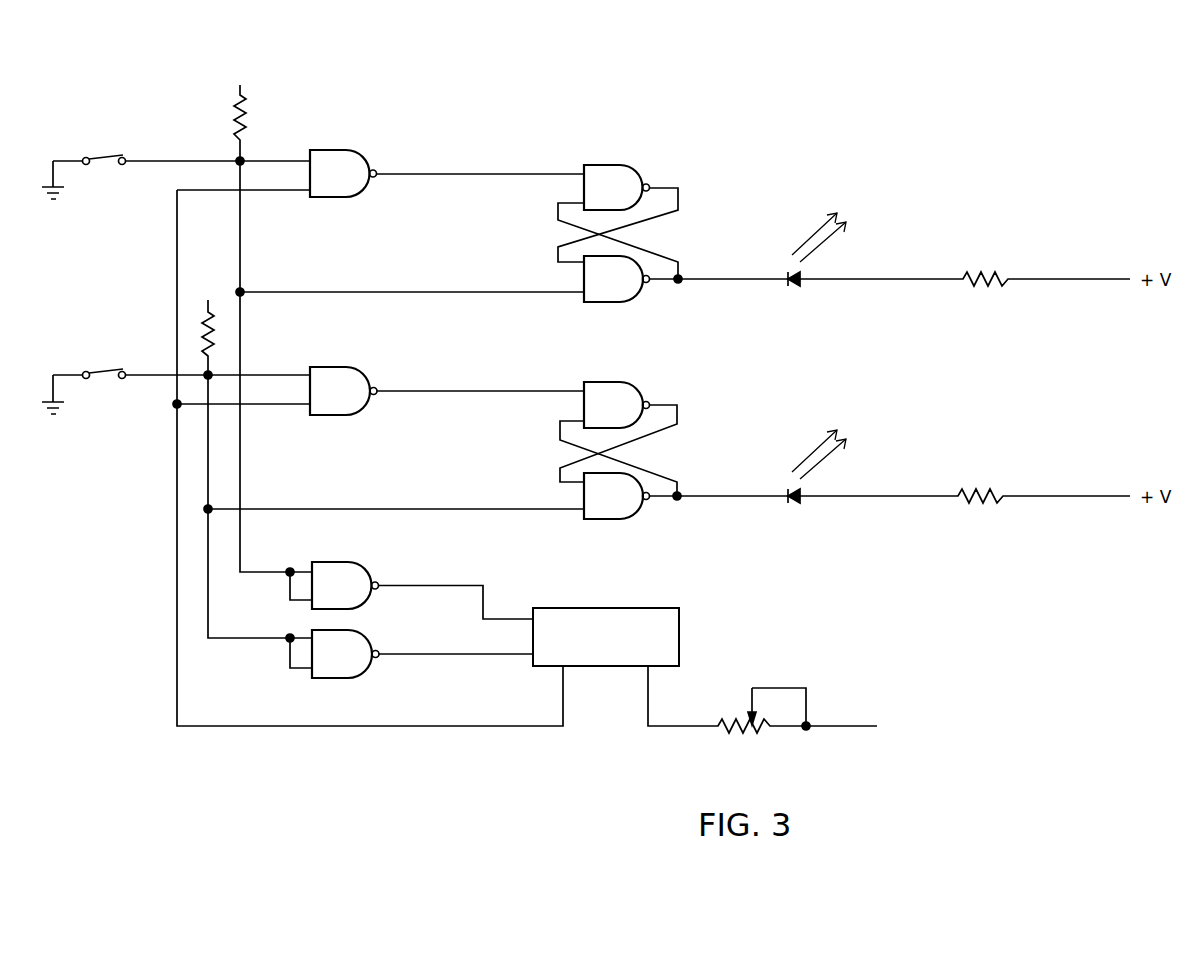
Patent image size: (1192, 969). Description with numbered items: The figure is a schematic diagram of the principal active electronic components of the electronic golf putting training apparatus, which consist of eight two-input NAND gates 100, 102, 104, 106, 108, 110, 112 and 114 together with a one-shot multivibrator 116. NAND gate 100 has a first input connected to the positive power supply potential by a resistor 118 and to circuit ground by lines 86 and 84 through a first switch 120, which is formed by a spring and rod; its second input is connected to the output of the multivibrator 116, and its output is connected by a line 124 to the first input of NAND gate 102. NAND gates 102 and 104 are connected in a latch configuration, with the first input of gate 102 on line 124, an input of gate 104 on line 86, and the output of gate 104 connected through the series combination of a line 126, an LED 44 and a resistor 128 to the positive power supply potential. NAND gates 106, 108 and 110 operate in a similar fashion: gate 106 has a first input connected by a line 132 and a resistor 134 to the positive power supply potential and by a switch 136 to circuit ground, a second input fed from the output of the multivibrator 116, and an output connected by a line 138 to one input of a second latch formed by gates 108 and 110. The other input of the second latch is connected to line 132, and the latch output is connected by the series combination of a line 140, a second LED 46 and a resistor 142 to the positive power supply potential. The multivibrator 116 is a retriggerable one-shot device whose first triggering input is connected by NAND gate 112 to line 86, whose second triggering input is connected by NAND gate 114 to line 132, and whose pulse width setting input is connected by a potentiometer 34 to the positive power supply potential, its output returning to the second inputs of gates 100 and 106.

The line 84 is at (64, 160).
The first switch 120 is at (106, 157).
The line 86 is at (163, 160).
The resistor 118 is at (248, 101).
The NAND gate 100 is at (332, 151).
The line 124 is at (440, 174).
The NAND gate 102 is at (610, 165).
The NAND gate 104 is at (634, 303).
The line 126 is at (723, 281).
The LED 44 is at (796, 286).
The resistor 128 is at (985, 281).
The resistor 134 is at (200, 323).
The switch 136 is at (106, 372).
The line 132 is at (262, 375).
The NAND gate 106 is at (355, 366).
The line 138 is at (435, 391).
The NAND gate 108 is at (636, 383).
The NAND gate 110 is at (624, 519).
The line 140 is at (724, 497).
The light emitting diode 46 is at (800, 503).
The resistor 142 is at (985, 498).
The NAND gate 112 is at (359, 561).
The NAND gate 114 is at (361, 632).
The one-shot multivibrator 116 is at (682, 615).
The potentiometer 34 is at (745, 736).